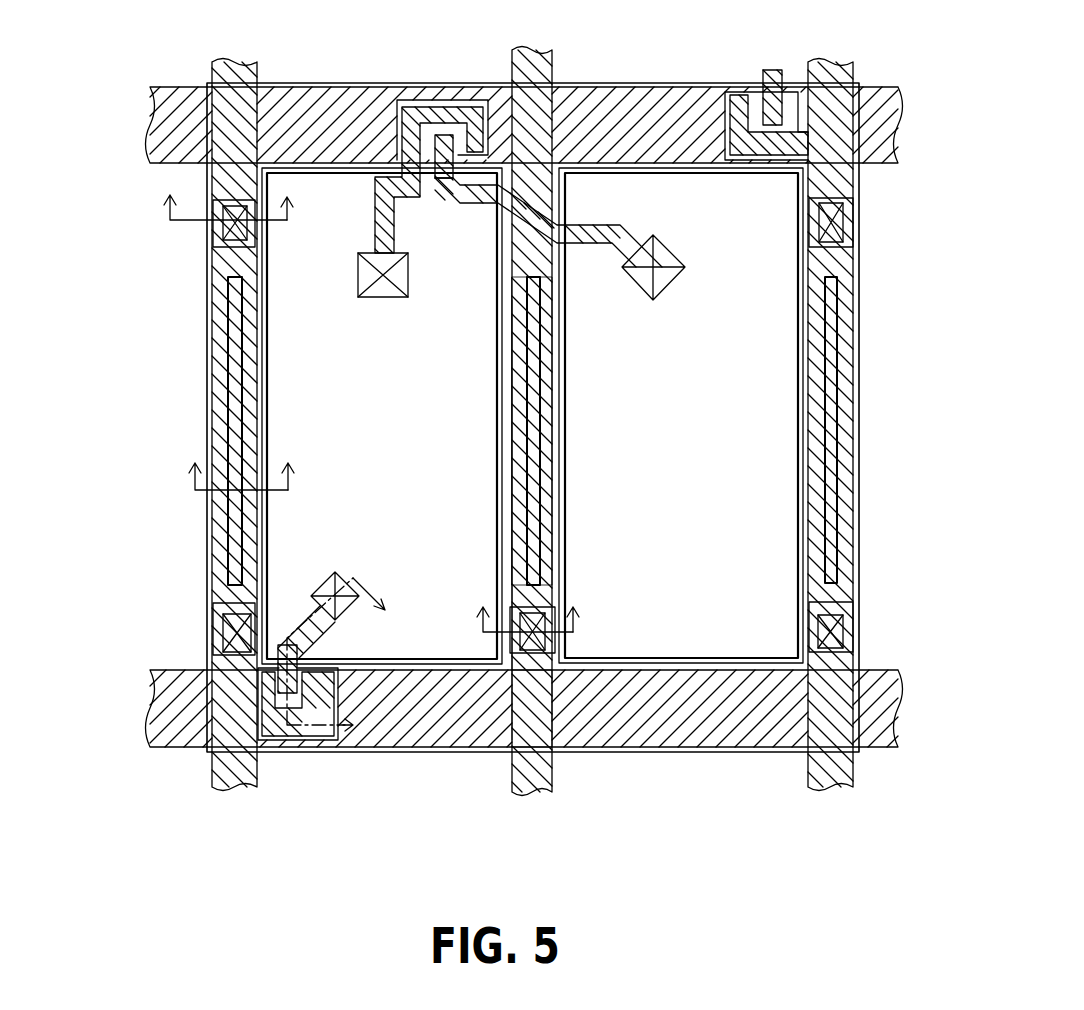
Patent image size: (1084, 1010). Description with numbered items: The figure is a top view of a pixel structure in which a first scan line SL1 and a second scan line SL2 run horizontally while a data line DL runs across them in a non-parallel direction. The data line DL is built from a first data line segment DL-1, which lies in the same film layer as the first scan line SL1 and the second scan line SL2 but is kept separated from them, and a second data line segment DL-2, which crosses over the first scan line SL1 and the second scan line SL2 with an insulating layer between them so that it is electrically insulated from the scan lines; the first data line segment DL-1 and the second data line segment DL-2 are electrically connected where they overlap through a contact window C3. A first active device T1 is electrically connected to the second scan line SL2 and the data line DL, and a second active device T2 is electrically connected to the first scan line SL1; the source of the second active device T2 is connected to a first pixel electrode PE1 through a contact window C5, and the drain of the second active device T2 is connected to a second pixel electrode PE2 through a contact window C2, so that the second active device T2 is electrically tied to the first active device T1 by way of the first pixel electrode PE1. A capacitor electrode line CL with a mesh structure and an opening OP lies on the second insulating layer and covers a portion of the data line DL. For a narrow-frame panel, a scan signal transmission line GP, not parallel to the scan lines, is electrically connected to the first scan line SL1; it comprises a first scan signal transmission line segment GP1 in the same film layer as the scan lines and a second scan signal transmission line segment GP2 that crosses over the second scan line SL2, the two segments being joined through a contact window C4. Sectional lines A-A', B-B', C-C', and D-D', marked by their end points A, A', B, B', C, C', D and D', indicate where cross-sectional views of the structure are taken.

The first scan line SL1 is at (150, 130).
The second scan line SL2 is at (160, 695).
The capacitor electrode line CL is at (365, 83).
The data line DL is at (142, 332).
The first data line segment DL-1 is at (223, 397).
The second data line segment DL-2 is at (218, 187).
The first active device T1 is at (299, 750).
The second active device T2 is at (453, 68).
The contact window C2 is at (663, 243).
The contact window C3 is at (248, 226).
The contact window C4 is at (520, 622).
The contact window C5 is at (408, 277).
The opening OP is at (540, 318).
The scan signal transmission line GP is at (658, 390).
The first scan signal transmission line segment GP1 is at (548, 425).
The second scan signal transmission line segment GP2 is at (543, 678).
The first pixel electrode PE1 is at (415, 668).
The second pixel electrode PE2 is at (742, 665).
The sectional line A-A' A is at (333, 657).
The sectional line A- A' is at (381, 602).
The sectional line B-B' B is at (230, 477).
The sectional line B- B' is at (298, 479).
The sectional line C-C' C is at (217, 202).
The sectional line C- C' is at (296, 201).
The sectional line D-D' D is at (515, 620).
The sectional line D- D' is at (581, 620).